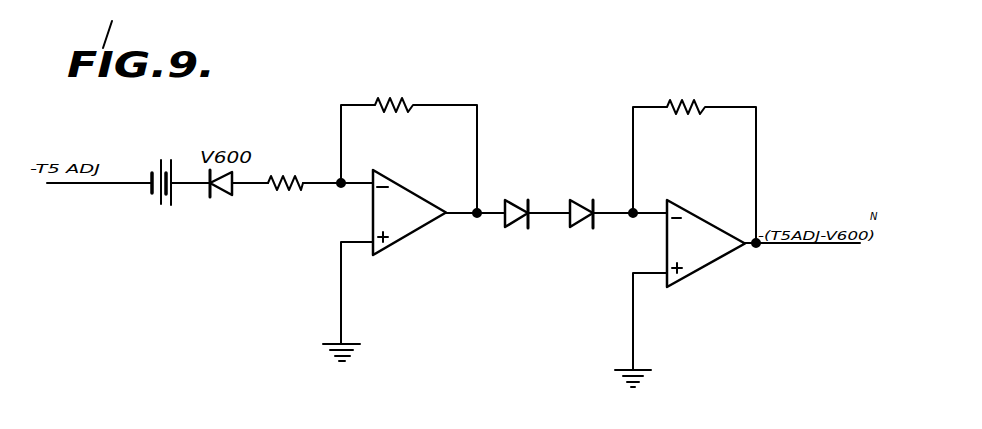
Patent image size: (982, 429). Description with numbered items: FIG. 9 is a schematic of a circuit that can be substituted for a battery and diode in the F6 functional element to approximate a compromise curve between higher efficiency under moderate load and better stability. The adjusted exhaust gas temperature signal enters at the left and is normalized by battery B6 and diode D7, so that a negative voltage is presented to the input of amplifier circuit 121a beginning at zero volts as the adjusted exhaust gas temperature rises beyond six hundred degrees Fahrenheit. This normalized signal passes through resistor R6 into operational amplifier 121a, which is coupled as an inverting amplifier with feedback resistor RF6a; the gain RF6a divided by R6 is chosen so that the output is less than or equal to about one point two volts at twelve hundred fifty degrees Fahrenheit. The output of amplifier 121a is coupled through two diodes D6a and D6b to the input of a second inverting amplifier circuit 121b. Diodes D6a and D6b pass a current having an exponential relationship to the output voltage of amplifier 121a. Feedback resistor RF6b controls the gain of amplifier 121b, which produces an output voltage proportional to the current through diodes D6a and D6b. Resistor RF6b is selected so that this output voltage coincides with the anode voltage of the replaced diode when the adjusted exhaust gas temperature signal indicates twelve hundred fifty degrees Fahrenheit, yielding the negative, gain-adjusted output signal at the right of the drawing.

The battery B6 is at (160, 197).
The diode D7 is at (230, 196).
The resistor R6 is at (285, 174).
The feedback resistor RF6a is at (409, 146).
The operational amplifier 121a is at (410, 234).
The diode D6a is at (517, 227).
The diode D6b is at (598, 172).
The feedback resistor RF6b is at (694, 161).
The inverting amplifier circuit 121b is at (714, 261).